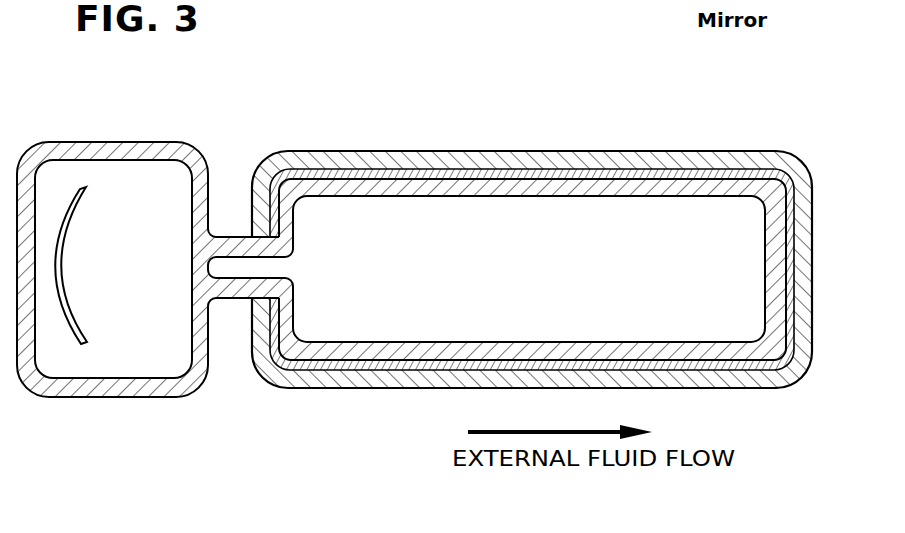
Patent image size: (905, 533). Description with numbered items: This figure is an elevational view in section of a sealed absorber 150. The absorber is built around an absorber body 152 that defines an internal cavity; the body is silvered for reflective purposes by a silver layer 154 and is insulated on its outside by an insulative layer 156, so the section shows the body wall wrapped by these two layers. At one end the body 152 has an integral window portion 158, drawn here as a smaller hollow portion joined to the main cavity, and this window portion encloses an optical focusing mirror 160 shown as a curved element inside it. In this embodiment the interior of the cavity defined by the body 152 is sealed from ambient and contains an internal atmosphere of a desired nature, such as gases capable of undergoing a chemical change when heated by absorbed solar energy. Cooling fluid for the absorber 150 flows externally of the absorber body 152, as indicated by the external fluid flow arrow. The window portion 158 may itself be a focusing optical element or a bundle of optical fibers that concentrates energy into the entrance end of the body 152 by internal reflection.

The sealed absorber 150 is at (520, 133).
The absorber body 152 is at (337, 183).
The silver layer 154 is at (641, 172).
The insulative layer 156 is at (720, 150).
The window portion 158 is at (151, 141).
The optical focusing mirror 160 is at (68, 302).